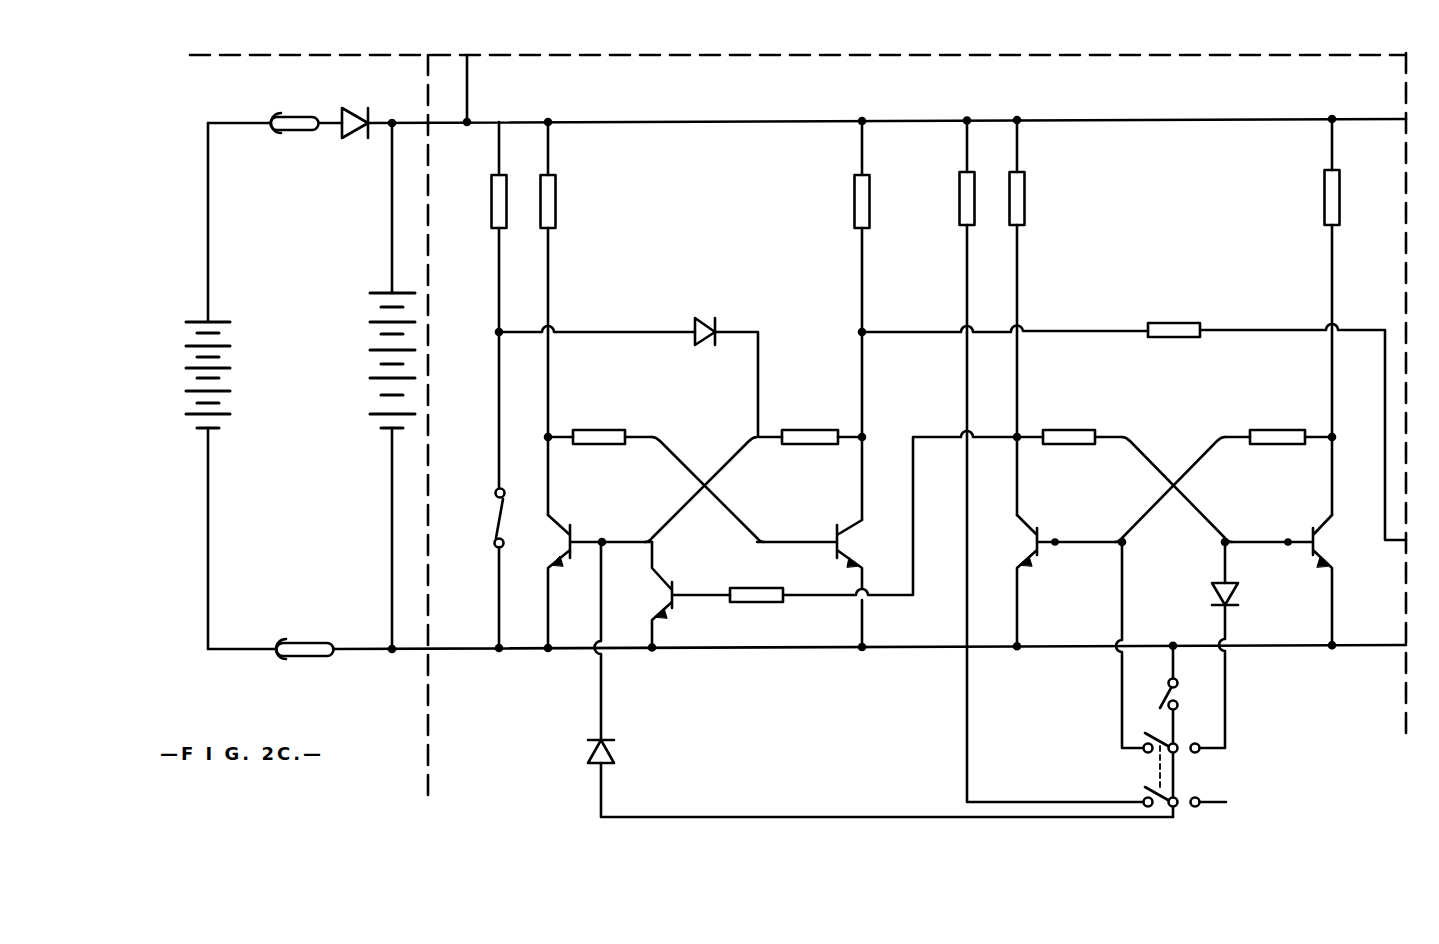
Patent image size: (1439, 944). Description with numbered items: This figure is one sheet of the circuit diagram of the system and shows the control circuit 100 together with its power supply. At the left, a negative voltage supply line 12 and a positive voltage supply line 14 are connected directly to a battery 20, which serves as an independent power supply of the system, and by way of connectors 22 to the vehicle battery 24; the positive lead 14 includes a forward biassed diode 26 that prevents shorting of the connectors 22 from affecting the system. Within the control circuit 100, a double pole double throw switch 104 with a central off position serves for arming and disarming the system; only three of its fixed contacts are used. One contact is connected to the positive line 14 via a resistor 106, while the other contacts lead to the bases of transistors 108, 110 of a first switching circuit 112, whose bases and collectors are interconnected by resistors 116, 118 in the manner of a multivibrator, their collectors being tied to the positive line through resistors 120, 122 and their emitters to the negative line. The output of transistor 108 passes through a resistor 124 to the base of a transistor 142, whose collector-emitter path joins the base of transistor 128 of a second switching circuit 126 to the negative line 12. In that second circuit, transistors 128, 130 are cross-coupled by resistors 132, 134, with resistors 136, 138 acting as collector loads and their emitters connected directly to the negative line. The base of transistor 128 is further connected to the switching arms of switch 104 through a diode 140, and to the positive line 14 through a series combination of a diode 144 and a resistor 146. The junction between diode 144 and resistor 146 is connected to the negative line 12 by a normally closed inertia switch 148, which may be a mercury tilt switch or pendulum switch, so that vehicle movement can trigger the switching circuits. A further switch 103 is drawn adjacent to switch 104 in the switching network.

The negative voltage supply line 12 is at (405, 653).
The positive voltage supply line 14 is at (620, 122).
The battery 20 is at (378, 324).
The connectors 22 is at (300, 131).
The vehicle battery 24 is at (220, 368).
The forward biassed diode 26 is at (352, 106).
The control circuit 100 is at (470, 775).
The switch 103 is at (1178, 683).
The double pole double throw switch 104 is at (1195, 782).
The resistor 106 is at (964, 185).
The transistor 108 is at (1043, 535).
The transistor 110 is at (1310, 535).
The first switching circuit 112 is at (1157, 440).
The resistor 116 is at (1050, 430).
The resistor 118 is at (1298, 430).
The resistor 120 is at (1020, 188).
The resistor 122 is at (1330, 185).
The resistor 124 is at (770, 604).
The second switching circuit 126 is at (693, 432).
The transistor 128 is at (575, 528).
The transistor 130 is at (842, 528).
The resistor 132 is at (586, 430).
The resistor 134 is at (832, 430).
The resistor 136 is at (552, 186).
The resistor 138 is at (858, 185).
The diode 140 is at (612, 740).
The transistor 142 is at (678, 585).
The diode 144 is at (720, 328).
The resistor 146 is at (503, 190).
The inertia switch 148 is at (495, 510).